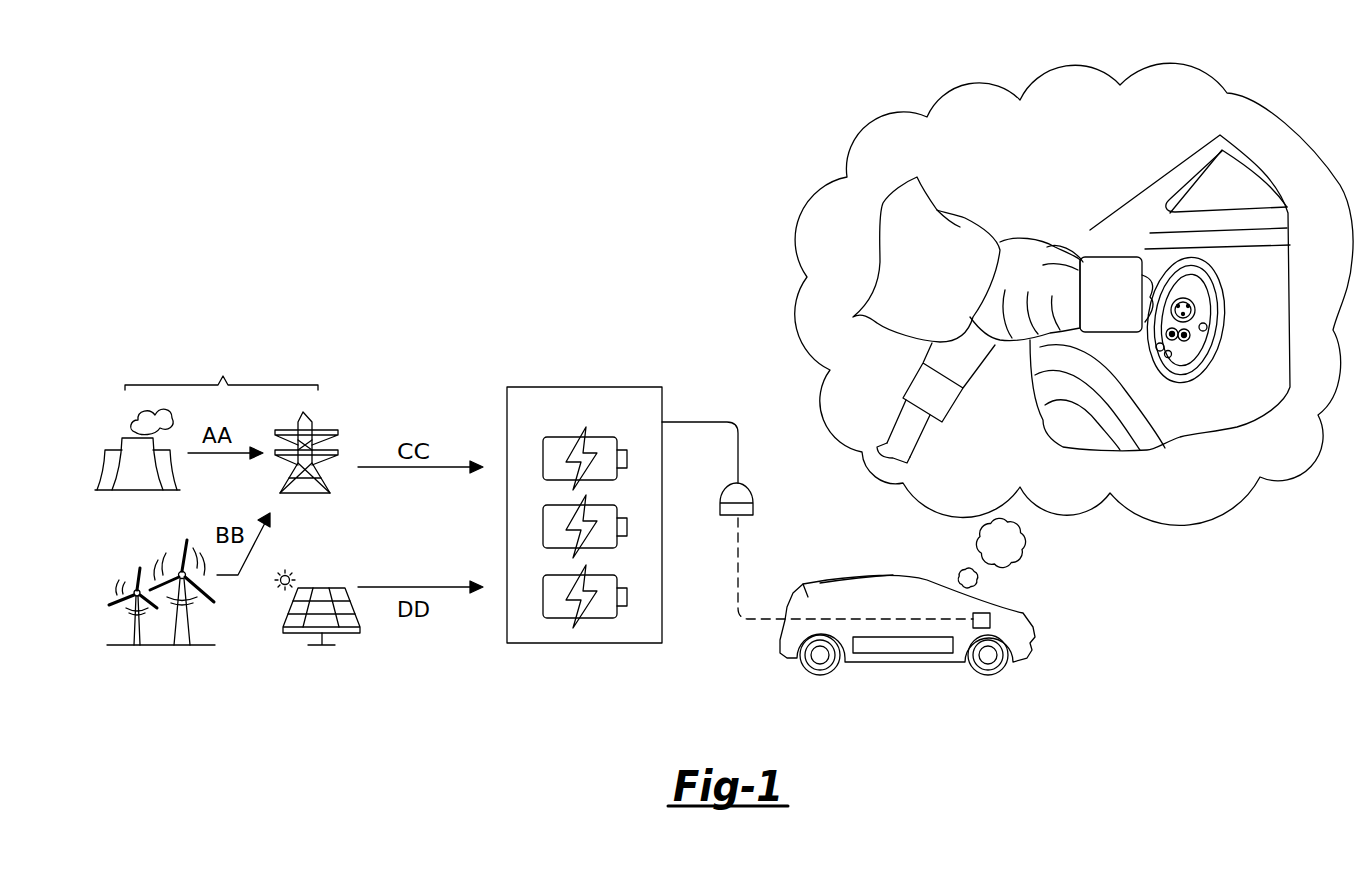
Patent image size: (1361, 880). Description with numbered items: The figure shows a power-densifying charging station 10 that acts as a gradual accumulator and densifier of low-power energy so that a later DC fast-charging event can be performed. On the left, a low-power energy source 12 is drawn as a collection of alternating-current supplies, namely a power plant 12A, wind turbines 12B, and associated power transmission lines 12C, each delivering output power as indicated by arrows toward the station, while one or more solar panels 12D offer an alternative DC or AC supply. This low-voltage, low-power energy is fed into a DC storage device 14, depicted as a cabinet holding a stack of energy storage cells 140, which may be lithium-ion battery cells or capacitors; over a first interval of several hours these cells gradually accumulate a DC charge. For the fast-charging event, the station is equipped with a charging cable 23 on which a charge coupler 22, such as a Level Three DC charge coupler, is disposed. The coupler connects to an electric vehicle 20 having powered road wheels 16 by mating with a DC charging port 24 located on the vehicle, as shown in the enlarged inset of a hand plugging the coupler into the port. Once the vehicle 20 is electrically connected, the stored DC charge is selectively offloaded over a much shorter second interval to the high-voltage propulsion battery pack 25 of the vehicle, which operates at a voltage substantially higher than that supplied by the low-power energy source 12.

The power-densifying charging station 10 is at (543, 308).
The low-power energy source 12 is at (221, 369).
The power plant 12A is at (130, 470).
The wind turbines 12B is at (130, 630).
The power transmission lines 12C is at (305, 412).
The solar panels 12D is at (323, 646).
The DC storage device 14 is at (542, 387).
The energy storage cells 140 is at (542, 527).
The powered road wheels 16 is at (815, 677).
The electric vehicle (EV) 20 is at (1038, 595).
The charge coupler 22 is at (757, 503).
The charging cable 23 is at (693, 422).
The DC charging port 24 is at (1030, 633).
The propulsion battery pack 25 is at (903, 653).